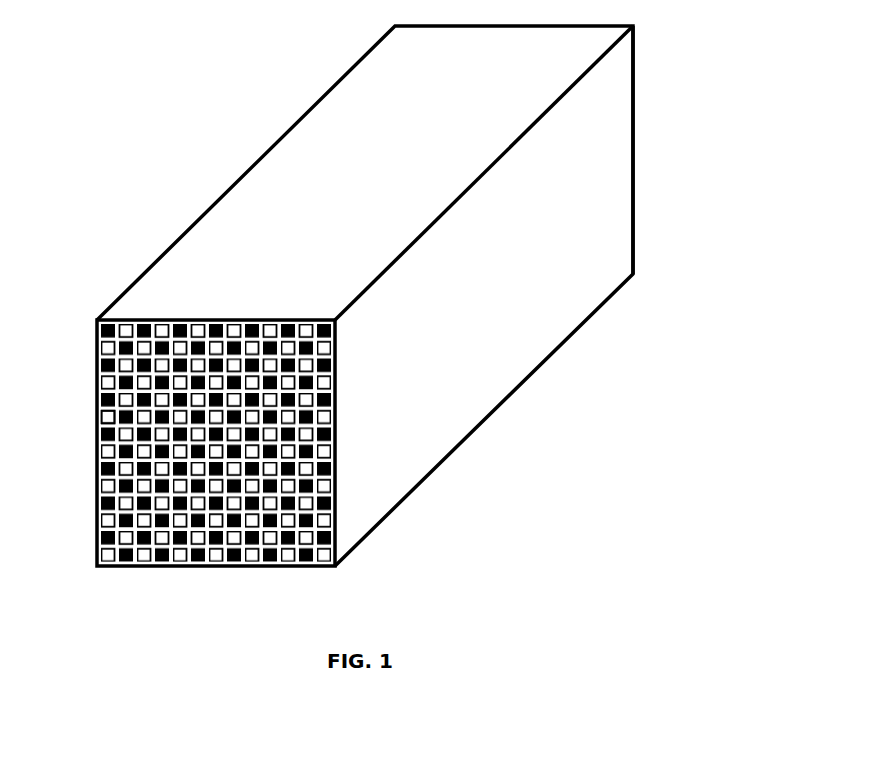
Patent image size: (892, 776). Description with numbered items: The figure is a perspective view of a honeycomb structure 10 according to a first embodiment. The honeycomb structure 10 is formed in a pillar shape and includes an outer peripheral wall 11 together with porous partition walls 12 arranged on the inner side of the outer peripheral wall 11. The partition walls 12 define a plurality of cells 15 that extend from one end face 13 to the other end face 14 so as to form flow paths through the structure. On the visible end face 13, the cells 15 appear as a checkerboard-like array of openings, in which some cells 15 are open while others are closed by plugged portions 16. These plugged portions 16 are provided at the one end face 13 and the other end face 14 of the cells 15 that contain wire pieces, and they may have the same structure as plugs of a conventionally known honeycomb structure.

The honeycomb structure 10 is at (186, 148).
The outer peripheral wall 11 is at (530, 337).
The partition walls 12 is at (97, 455).
The one end face 13 is at (338, 568).
The other end face 14 is at (633, 190).
The cells 15 is at (100, 418).
The plugged portions 16 is at (97, 500).